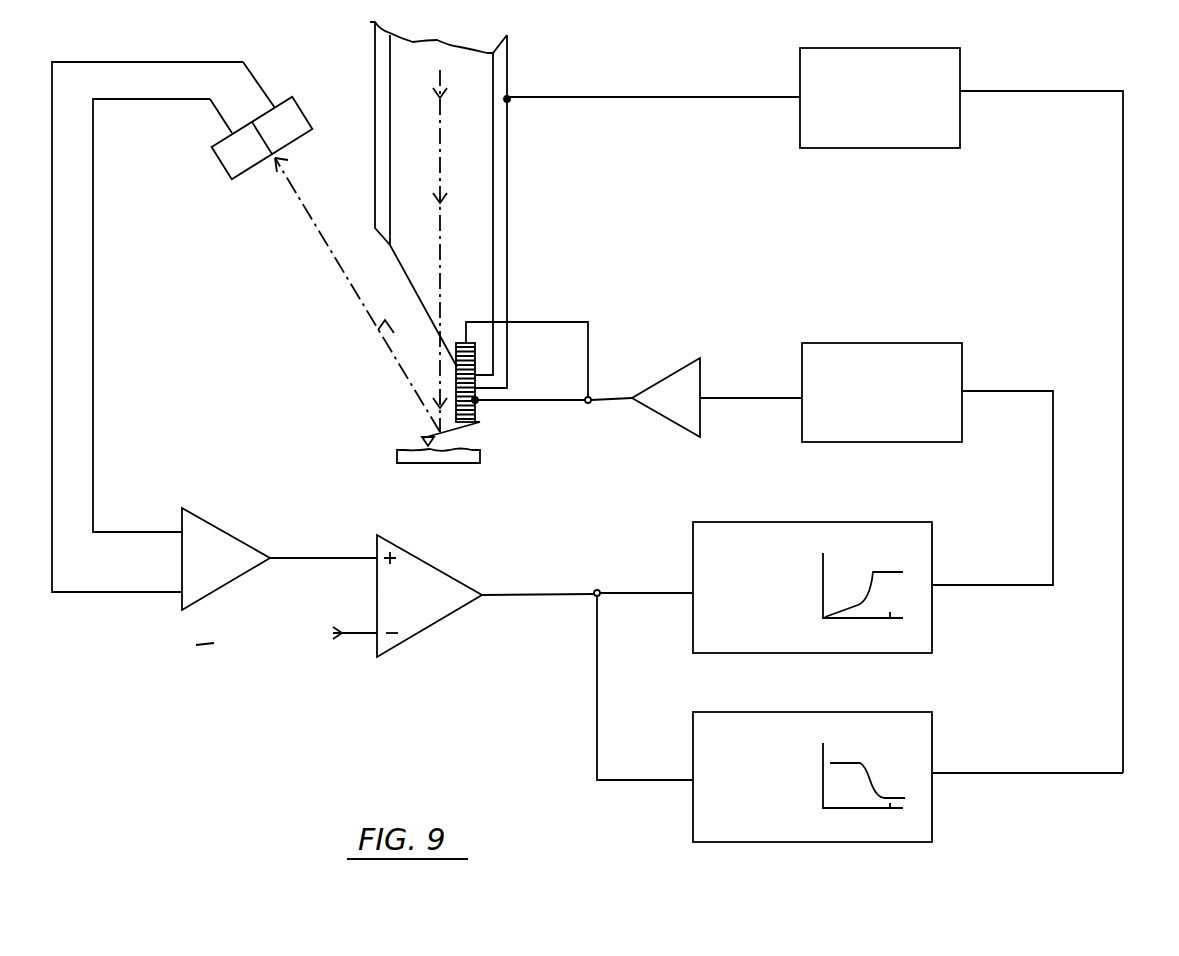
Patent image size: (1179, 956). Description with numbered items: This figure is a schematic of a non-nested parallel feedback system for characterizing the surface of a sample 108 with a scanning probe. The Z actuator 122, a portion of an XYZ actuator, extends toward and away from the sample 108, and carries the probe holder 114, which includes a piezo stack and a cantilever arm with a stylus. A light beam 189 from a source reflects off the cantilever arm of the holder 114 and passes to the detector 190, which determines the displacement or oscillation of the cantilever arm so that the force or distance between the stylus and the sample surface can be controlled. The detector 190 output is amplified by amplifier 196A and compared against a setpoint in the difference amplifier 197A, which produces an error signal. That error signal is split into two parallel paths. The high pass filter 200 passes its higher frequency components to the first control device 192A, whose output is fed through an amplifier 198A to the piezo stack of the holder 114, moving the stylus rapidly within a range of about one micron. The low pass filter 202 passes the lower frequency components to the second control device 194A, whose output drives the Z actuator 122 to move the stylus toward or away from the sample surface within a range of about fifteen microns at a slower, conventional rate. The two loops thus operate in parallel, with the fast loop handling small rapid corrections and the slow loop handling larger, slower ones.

The detector 190 is at (286, 98).
The light beam 189 is at (322, 243).
The Z actuator 122 is at (505, 166).
The probe holder 114 is at (484, 412).
The sample 108 is at (397, 456).
The second control device 194A is at (960, 50).
The amplifier 198A is at (682, 364).
The first control device 192A is at (962, 345).
The amplifier 196A is at (209, 532).
The difference amplifier 197A is at (436, 568).
The high pass filter 200 is at (800, 492).
The low pass filter 202 is at (882, 712).